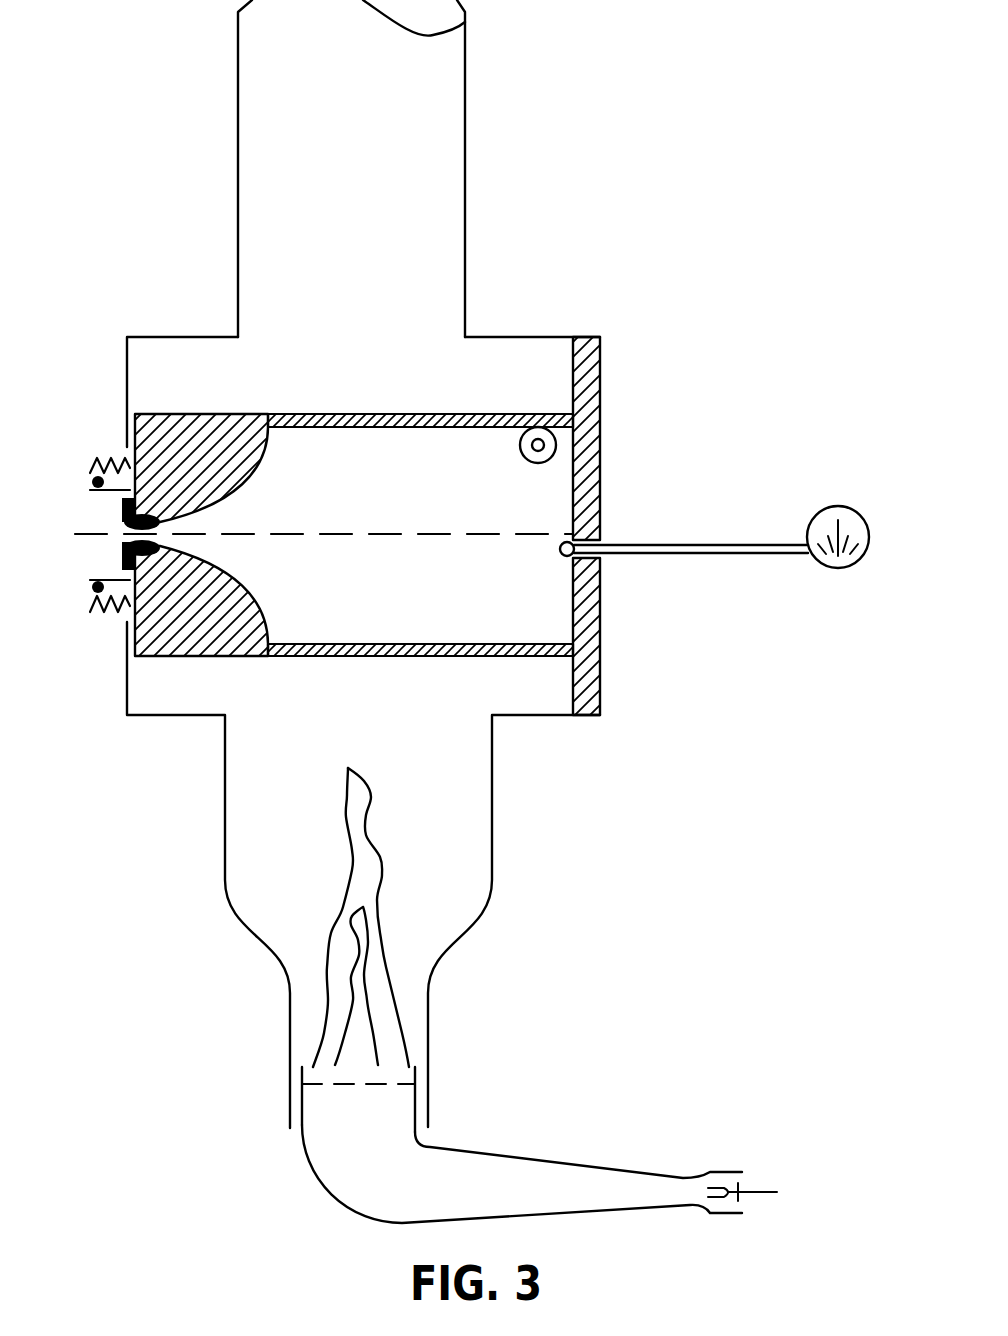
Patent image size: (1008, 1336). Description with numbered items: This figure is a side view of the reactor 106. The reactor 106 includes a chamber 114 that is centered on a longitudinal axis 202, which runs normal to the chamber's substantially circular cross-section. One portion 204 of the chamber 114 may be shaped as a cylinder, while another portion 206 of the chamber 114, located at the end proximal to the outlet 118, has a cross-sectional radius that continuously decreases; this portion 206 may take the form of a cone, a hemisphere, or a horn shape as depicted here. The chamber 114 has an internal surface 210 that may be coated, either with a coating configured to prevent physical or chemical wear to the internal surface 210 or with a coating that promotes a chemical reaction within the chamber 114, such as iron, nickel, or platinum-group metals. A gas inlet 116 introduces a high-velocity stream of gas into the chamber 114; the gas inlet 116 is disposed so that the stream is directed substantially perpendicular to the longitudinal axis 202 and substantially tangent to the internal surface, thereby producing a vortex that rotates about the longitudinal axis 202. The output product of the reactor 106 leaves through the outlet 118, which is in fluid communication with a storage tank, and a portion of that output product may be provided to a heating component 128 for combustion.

The reactor 106 is at (600, 453).
The chamber 114 is at (600, 633).
The gas inlet 116 is at (522, 445).
The outlet 118 is at (118, 509).
The heating component 128 is at (462, 1168).
The longitudinal axis 202 is at (415, 534).
The portion of the chamber 204 is at (365, 427).
The portion of the chamber 206 is at (253, 457).
The internal surface 210 is at (378, 644).